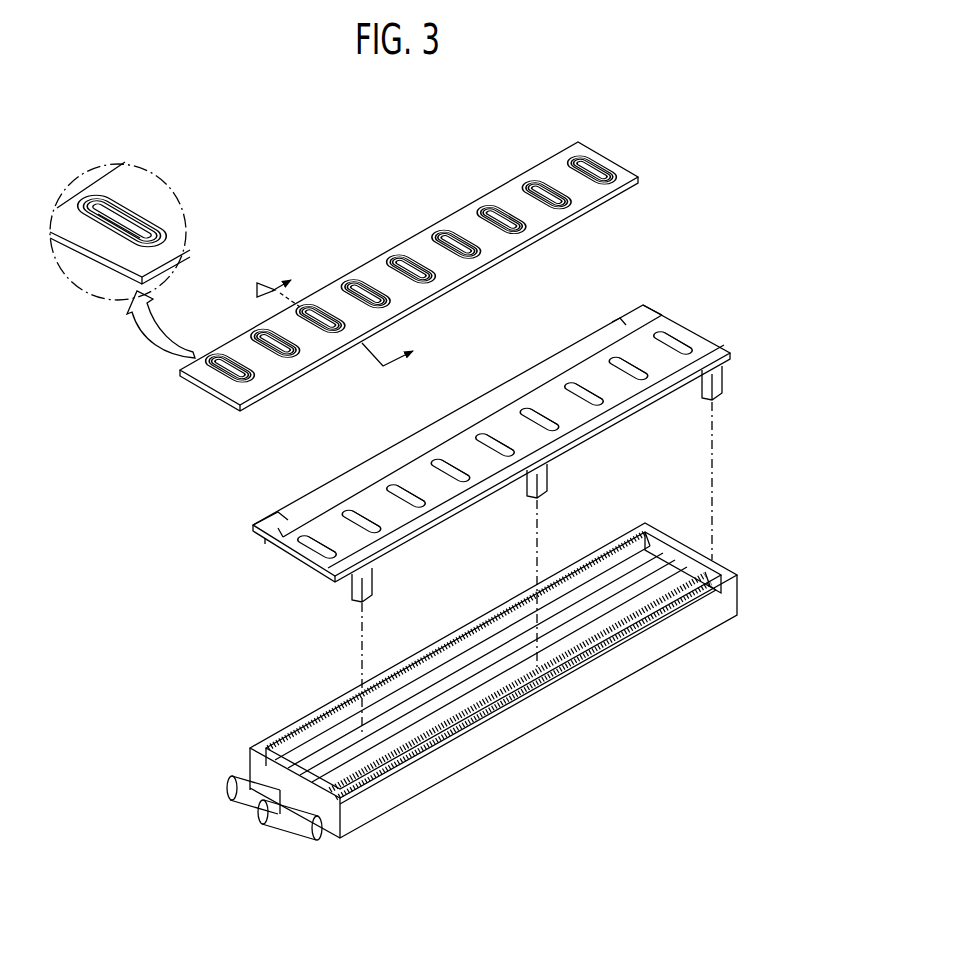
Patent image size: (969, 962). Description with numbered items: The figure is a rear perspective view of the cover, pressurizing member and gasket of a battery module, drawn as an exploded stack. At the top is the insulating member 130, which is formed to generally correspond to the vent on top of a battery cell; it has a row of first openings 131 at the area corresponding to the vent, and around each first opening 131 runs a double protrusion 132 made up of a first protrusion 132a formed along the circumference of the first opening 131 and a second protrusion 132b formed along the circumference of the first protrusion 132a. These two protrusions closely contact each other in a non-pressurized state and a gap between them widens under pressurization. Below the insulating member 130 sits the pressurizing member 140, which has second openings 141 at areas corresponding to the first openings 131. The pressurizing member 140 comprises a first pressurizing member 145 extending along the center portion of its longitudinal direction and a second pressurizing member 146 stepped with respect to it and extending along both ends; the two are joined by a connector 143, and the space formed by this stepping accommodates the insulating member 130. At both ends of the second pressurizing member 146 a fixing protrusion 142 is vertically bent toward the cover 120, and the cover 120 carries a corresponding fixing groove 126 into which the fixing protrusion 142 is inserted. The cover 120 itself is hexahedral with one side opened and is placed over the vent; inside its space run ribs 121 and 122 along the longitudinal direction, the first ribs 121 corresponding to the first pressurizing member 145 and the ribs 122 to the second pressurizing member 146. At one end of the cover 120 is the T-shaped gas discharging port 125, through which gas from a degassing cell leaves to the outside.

The cover 120 is at (487, 670).
The first ribs 121 is at (400, 750).
The second ribs 122 is at (340, 793).
The gas discharging port 125 is at (238, 789).
The fixing groove 126 is at (530, 690).
The insulating member 130 is at (382, 245).
The first opening 131 is at (361, 232).
The double protrusion 132 is at (184, 196).
The first protrusion 132a is at (142, 206).
The second protrusion 132b is at (122, 195).
The pressurizing member 140 is at (516, 487).
The second opening 141 is at (372, 517).
The fixing protrusion 142 is at (622, 311).
The connector 143 is at (295, 523).
The first pressurizing member 145 is at (500, 432).
The second pressurizing member 146 is at (470, 503).